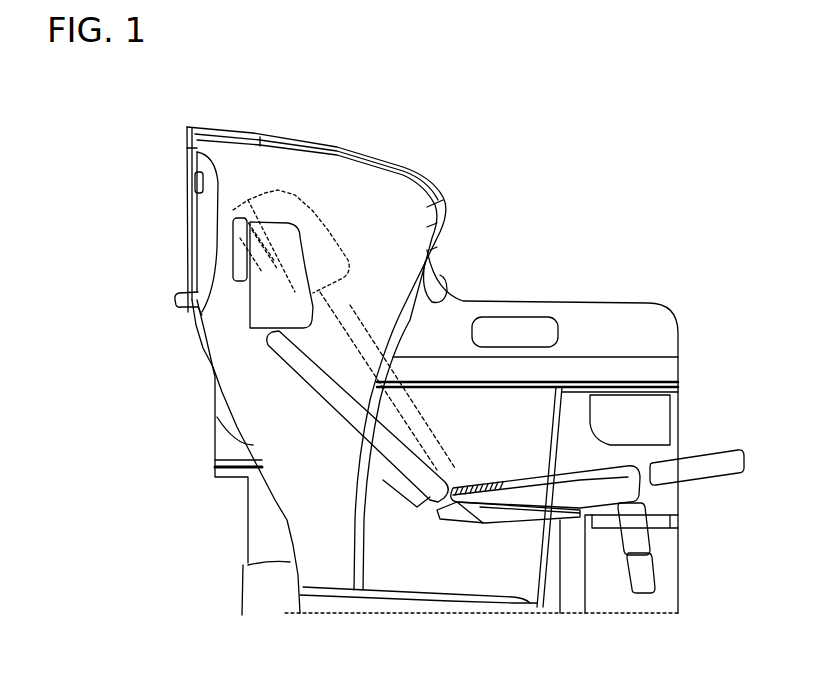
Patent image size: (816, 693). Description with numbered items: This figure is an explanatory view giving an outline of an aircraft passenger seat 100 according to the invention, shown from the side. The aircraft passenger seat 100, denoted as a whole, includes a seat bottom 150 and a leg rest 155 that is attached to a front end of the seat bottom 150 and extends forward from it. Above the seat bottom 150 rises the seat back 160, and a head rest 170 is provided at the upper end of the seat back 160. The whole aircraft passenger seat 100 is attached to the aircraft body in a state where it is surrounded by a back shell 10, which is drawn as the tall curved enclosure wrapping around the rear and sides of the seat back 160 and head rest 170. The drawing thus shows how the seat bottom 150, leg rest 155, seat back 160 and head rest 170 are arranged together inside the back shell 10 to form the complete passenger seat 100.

The back shell 10 is at (305, 478).
The aircraft passenger seat 100 is at (463, 413).
The seat bottom 150 is at (527, 497).
The leg rest 155 is at (718, 453).
The seat back 160 is at (317, 378).
The head rest 170 is at (285, 252).